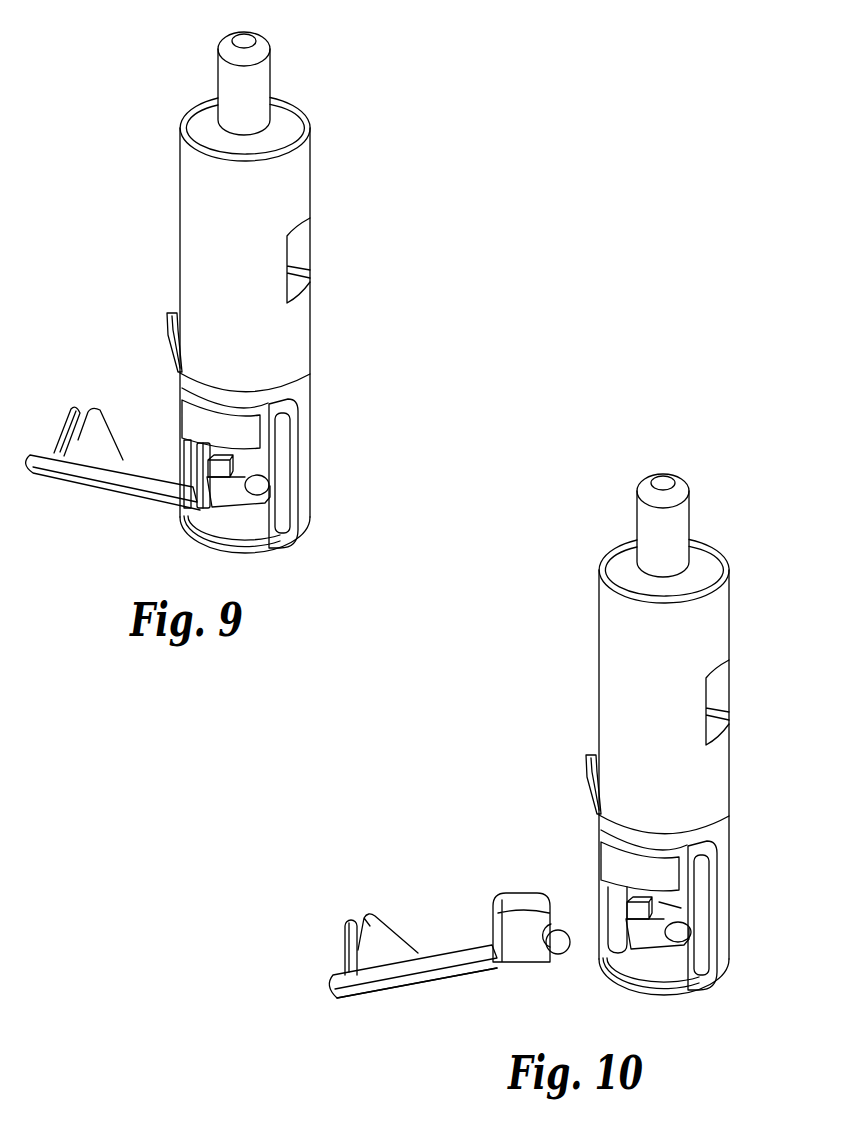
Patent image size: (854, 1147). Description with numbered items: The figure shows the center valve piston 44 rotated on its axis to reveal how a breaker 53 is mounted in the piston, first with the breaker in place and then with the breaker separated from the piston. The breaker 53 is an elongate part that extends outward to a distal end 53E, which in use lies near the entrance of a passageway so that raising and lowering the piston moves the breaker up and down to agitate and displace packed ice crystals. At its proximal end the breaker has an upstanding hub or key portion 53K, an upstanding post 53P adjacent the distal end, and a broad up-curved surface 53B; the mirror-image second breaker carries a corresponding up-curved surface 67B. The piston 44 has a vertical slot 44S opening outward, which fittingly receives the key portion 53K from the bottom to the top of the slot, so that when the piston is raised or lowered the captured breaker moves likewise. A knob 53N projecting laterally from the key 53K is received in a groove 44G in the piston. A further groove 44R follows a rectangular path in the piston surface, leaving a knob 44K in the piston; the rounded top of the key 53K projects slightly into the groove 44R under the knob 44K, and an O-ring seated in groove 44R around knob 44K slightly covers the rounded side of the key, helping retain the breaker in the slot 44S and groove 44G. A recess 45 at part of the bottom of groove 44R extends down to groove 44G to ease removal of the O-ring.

In FIG. 9, the piston 44 is at (198, 212).
In FIG. 10, the piston 44 is at (634, 734).
In FIG. 9, the knob 44K is at (217, 432).
In FIG. 10, the knob 44K is at (640, 844).
In FIG. 9, the groove 44R is at (265, 428).
In FIG. 10, the groove 44R is at (729, 915).
In FIG. 9, the groove 44G is at (247, 497).
In FIG. 10, the groove 44G is at (701, 923).
In FIG. 10, the slot 44S is at (571, 947).
In FIG. 10, the recess 45 is at (724, 892).
In FIG. 9, the breaker 53 is at (199, 455).
In FIG. 10, the breaker 53 is at (408, 926).
In FIG. 9, the key portion 53K is at (196, 478).
In FIG. 10, the key portion 53K is at (522, 892).
In FIG. 9, the knob 53N is at (260, 482).
In FIG. 10, the knob 53N is at (537, 938).
In FIG. 10, the post 53P is at (345, 942).
In FIG. 10, the up-curved surface 53B is at (377, 932).
In FIG. 10, the distal end 53E is at (326, 992).
In FIG. 9, the up-curved surface 67B is at (168, 323).